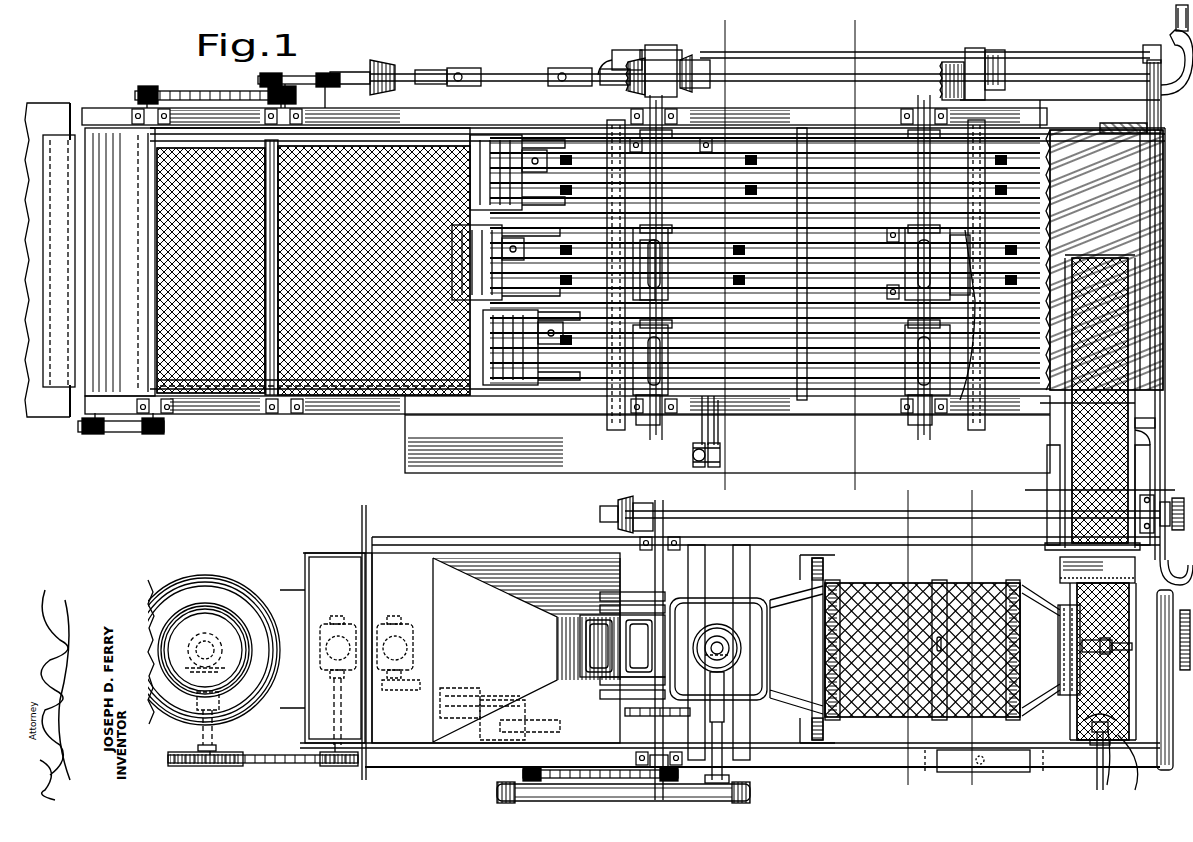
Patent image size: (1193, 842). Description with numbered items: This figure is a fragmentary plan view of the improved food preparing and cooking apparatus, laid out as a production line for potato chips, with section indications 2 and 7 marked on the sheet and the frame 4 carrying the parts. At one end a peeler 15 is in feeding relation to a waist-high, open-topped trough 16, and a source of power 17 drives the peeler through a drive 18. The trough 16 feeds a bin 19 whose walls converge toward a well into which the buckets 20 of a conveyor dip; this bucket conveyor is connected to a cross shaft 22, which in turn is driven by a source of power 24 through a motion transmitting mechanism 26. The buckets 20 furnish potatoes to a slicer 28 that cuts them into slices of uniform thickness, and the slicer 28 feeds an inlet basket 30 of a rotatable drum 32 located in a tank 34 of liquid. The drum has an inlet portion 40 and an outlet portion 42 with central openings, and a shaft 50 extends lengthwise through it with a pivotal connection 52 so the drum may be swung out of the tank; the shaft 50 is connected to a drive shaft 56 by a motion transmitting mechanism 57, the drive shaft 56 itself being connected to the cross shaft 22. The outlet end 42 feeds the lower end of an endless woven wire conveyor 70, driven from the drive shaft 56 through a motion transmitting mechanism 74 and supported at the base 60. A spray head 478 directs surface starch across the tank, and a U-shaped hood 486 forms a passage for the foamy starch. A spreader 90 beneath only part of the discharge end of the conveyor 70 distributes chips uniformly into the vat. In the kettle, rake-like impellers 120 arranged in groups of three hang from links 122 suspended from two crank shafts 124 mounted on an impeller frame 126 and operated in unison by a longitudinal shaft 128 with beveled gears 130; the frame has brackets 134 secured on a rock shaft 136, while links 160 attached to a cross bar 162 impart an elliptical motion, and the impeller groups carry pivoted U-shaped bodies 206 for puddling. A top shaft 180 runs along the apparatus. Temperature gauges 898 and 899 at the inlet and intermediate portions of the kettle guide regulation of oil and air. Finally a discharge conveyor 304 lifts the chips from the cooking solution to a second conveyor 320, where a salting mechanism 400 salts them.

The section line 2- 2 is at (270, 217).
The main frame 4 is at (432, 385).
The section line 7- 7 is at (898, 215).
The peeler 15 is at (205, 663).
The trough 16 is at (322, 648).
The source of power 17 is at (338, 680).
The drive 18 is at (290, 765).
The bin 19 is at (496, 648).
The buckets 20 is at (580, 620).
The cross shaft 22 is at (660, 595).
The source of power 24 is at (398, 653).
The motion transmitting mechanism 26 is at (598, 768).
The slicer 28 is at (770, 600).
The inlet basket 30 is at (750, 598).
The rotatable drum 32 is at (883, 732).
The tank 34 is at (780, 750).
The inlet portion 40 is at (802, 649).
The outlet portion 42 is at (1051, 650).
The shaft 50 is at (1082, 646).
The pivotal connection 52 is at (1111, 752).
The drive shaft 56 is at (830, 510).
The motion transmitting mechanism 57 is at (1175, 562).
The base frame 60 is at (800, 722).
The endless conveyor 70 is at (1138, 376).
The motion transmitting mechanism 74 is at (1150, 438).
The spreader 90 is at (1058, 205).
The impellers 120 is at (868, 145).
The links 122 is at (975, 400).
The crank shafts 124 is at (651, 423).
The impeller frame 126 is at (607, 410).
The longitudinally extending shaft 128 is at (765, 68).
The beveled gears 130 is at (676, 70).
The brackets 134 is at (612, 60).
The rock shaft 136 is at (1080, 56).
The links 160 is at (840, 352).
The cross bar 162 is at (808, 160).
The drive shaft 180 is at (515, 80).
The U-shaped bodies 206 is at (503, 384).
The discharge conveyor 304 is at (356, 370).
The second conveyor 320 is at (310, 261).
The salting mechanism 400 is at (126, 145).
The spray head 478 is at (1099, 767).
The hood 486 is at (1060, 565).
The temperature gauge 898 is at (720, 456).
The temperature gauge 899 is at (694, 468).